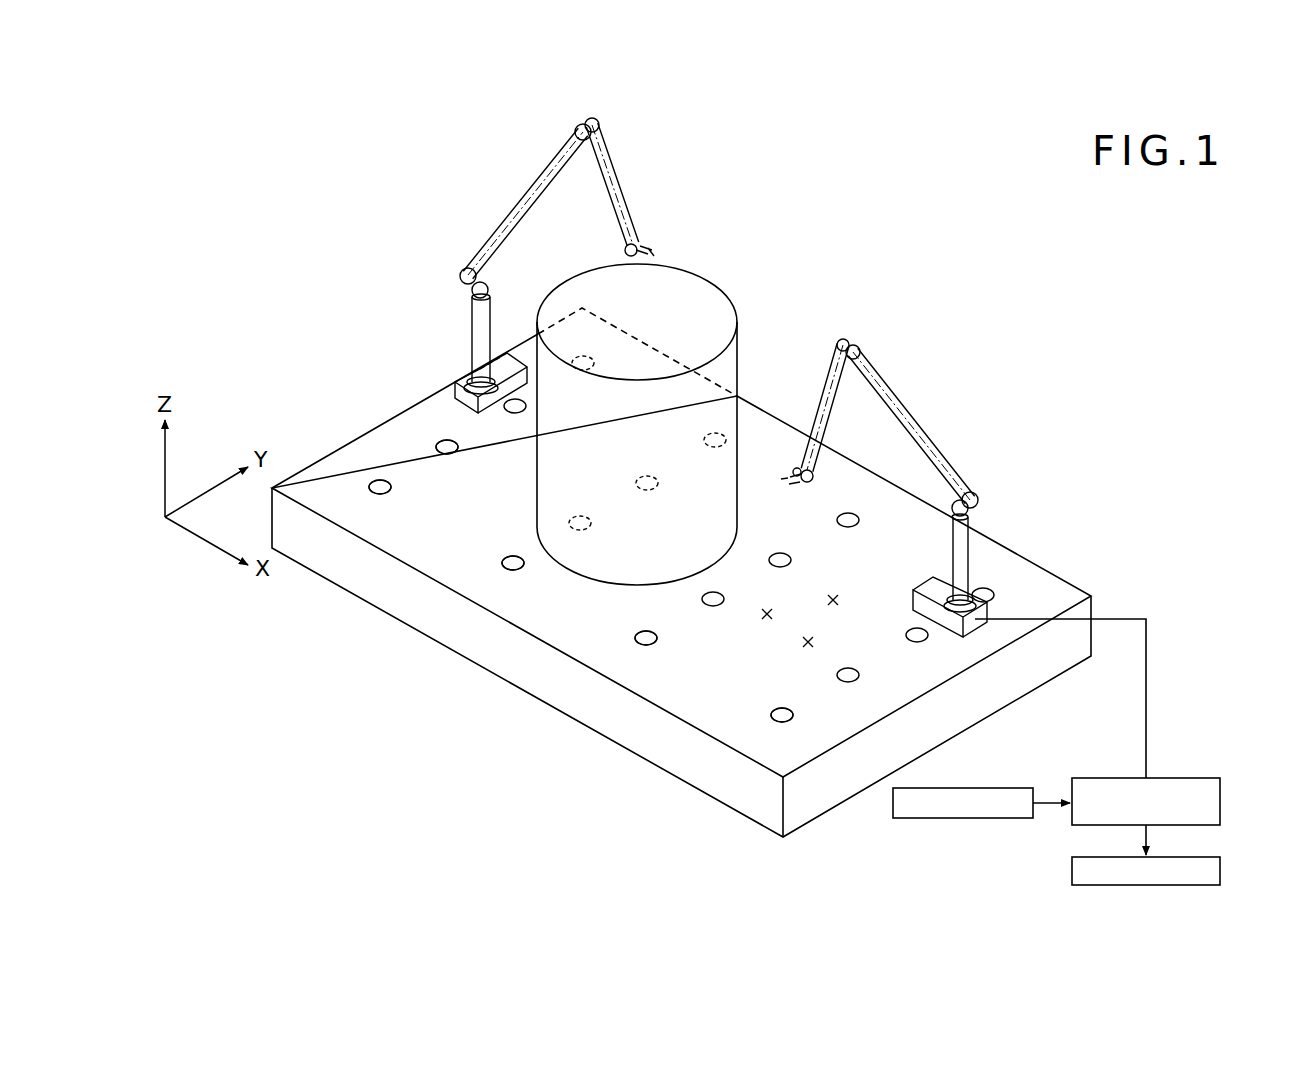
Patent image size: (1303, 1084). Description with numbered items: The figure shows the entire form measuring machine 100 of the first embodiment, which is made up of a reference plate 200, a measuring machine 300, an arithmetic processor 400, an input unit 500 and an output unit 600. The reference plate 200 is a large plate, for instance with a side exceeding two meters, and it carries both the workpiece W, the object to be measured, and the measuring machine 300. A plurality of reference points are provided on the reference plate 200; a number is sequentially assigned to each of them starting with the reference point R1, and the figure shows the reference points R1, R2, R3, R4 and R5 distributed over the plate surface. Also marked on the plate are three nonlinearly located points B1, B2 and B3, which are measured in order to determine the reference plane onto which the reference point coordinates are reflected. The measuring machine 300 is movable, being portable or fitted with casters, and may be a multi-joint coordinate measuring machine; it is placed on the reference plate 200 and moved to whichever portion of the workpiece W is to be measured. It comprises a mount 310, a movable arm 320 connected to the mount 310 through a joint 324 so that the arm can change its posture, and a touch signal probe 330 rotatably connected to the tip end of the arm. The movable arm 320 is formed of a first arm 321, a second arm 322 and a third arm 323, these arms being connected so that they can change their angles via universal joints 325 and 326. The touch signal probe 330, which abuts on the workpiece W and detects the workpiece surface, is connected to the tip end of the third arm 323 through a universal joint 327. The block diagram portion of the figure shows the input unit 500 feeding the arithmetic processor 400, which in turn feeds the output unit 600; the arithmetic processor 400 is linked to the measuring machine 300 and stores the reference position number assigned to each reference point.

The form measuring machine 100 is at (940, 325).
The reference plate 200 is at (1060, 592).
The measuring machine 300 is at (970, 428).
The mount 310 is at (924, 594).
The movable arm 320 is at (990, 455).
The first arm 321 is at (966, 552).
The second arm 322 is at (905, 410).
The third arm 323 is at (822, 377).
The joint 324 is at (978, 602).
The universal joint 325 is at (982, 496).
The universal joint 326 is at (855, 344).
The universal joint 327 is at (815, 480).
The touch signal probe 330 is at (793, 490).
The arithmetic processor 400 is at (1210, 778).
The input unit 500 is at (962, 818).
The output unit 600 is at (1072, 870).
The workpiece W is at (724, 305).
The reference point R1 is at (372, 482).
The reference point R2 is at (510, 570).
The reference point R3 is at (645, 645).
The reference point R4 is at (778, 720).
The reference point R5 is at (440, 442).
The measured point on reference plate B1 is at (809, 650).
The measured point on reference plate B2 is at (838, 600).
The measured point on reference plate B3 is at (772, 614).